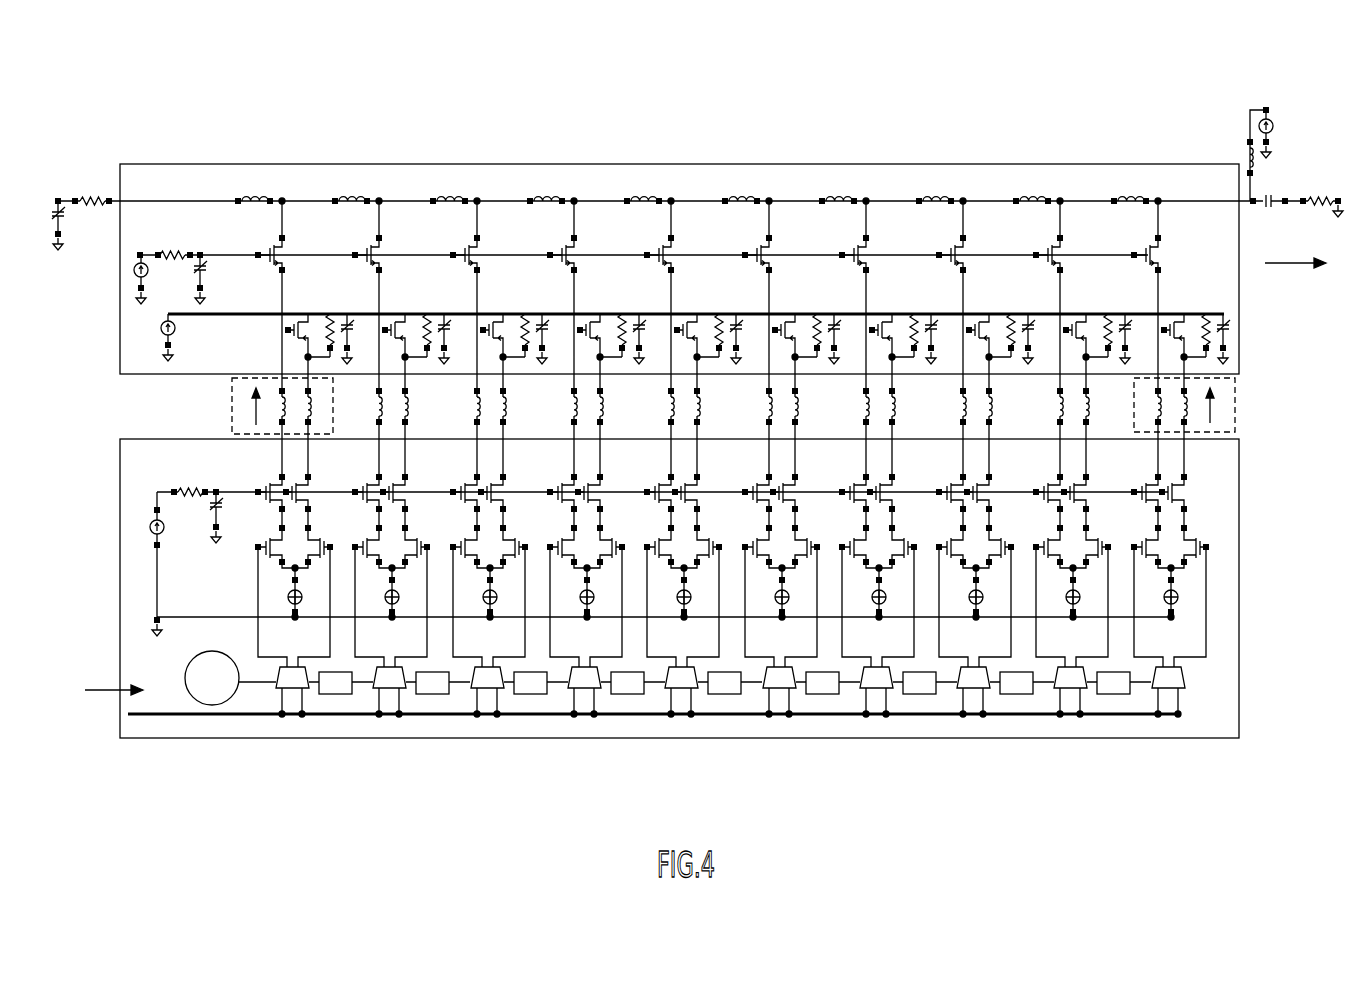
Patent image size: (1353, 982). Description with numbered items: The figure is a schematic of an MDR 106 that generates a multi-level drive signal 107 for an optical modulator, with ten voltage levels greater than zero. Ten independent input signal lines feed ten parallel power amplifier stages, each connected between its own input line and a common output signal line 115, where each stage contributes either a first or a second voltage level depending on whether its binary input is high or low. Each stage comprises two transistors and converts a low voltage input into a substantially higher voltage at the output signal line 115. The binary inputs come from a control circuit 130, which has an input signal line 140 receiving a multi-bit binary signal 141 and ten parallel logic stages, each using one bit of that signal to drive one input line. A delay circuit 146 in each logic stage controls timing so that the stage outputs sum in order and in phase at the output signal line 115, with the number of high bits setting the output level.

The MDR 106 is at (1230, 86).
The multi-level drive signal 107 is at (1287, 266).
The output signal line 115 is at (1203, 203).
The control circuit 130 is at (93, 577).
The multi-bit binary signal 141 is at (102, 688).
The input signal line 140 is at (177, 717).
The delay circuit 146 is at (335, 700).